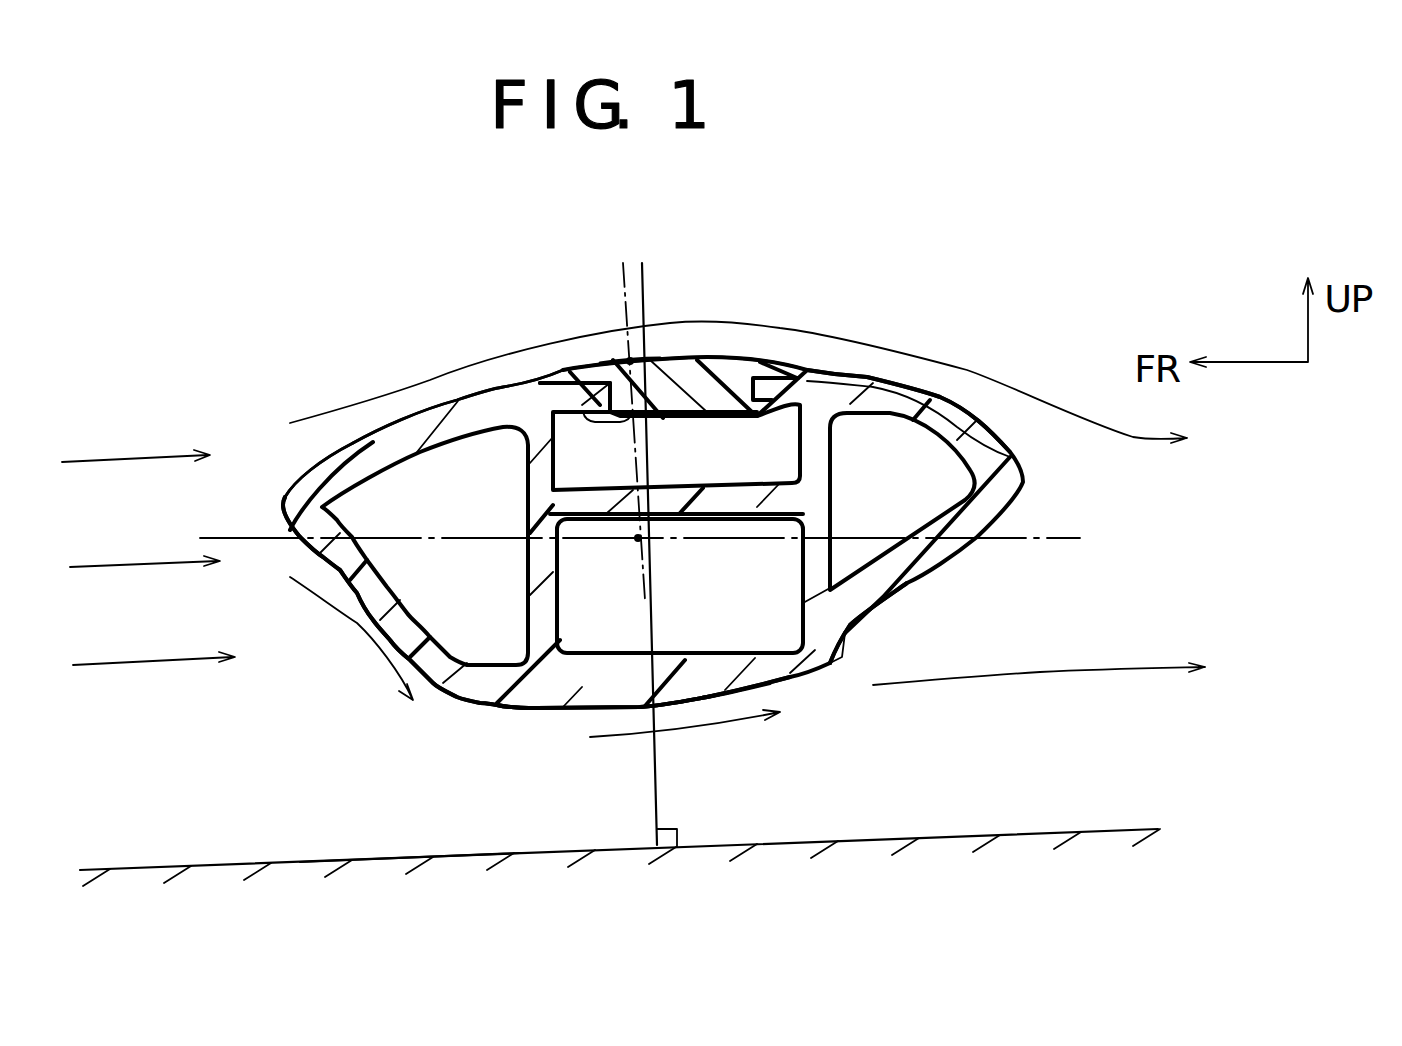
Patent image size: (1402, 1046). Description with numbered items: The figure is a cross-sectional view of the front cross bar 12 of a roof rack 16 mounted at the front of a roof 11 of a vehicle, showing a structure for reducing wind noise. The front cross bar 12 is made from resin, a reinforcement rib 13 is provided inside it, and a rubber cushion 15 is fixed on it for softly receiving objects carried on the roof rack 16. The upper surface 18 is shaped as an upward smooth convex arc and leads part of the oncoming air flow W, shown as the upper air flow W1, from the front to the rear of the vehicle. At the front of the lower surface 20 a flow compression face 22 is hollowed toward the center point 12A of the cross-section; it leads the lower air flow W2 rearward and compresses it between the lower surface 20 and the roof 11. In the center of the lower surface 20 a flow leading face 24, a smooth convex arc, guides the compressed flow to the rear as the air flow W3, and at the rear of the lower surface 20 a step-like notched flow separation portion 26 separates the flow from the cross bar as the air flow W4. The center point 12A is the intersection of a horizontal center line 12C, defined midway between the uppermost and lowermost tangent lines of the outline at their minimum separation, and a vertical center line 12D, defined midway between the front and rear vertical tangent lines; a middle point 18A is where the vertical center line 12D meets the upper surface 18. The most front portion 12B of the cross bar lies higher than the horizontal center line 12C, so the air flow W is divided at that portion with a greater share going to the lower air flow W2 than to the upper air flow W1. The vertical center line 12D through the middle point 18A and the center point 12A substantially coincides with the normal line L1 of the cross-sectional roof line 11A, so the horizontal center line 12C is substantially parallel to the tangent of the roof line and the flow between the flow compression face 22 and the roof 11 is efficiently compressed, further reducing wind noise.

The roof 11 is at (273, 847).
The cross-sectional roof line 11A is at (410, 860).
The front cross bar 12 is at (940, 368).
The center point 12A is at (640, 540).
The most front portion 12B is at (287, 497).
The horizontal center line 12C is at (487, 533).
The vertical center line 12D is at (622, 322).
The reinforcement rib 13 is at (802, 460).
The cushion 15 is at (753, 362).
The roof rack 16 is at (1033, 340).
The upper surface 18 is at (480, 379).
The middle point 18A is at (657, 345).
The lower surface 20 is at (535, 721).
The flow compression face 22 is at (366, 612).
The flow leading face 24 is at (697, 699).
The flow separation portion 26 is at (850, 636).
The normal line L1 is at (643, 284).
The air flow W is at (147, 456).
The upper air flow W1 is at (877, 341).
The lower air flow W2 is at (370, 648).
The compressed air flow led rearward W3 is at (757, 717).
The separated air flow W4 is at (993, 675).